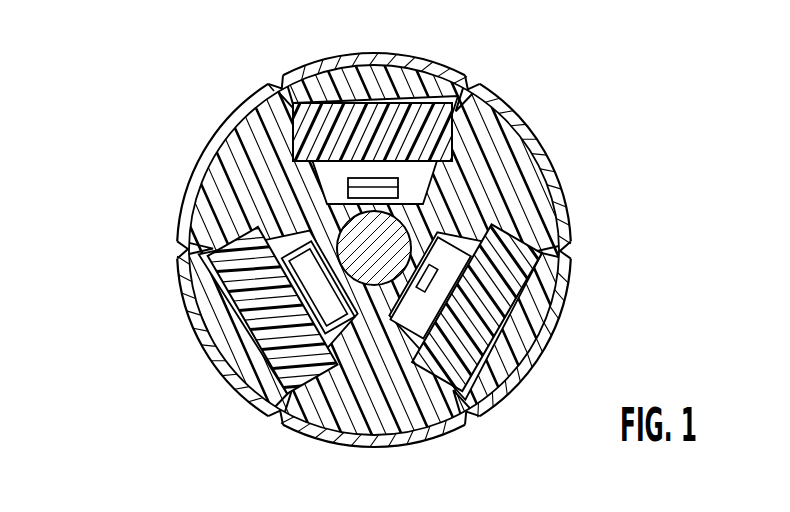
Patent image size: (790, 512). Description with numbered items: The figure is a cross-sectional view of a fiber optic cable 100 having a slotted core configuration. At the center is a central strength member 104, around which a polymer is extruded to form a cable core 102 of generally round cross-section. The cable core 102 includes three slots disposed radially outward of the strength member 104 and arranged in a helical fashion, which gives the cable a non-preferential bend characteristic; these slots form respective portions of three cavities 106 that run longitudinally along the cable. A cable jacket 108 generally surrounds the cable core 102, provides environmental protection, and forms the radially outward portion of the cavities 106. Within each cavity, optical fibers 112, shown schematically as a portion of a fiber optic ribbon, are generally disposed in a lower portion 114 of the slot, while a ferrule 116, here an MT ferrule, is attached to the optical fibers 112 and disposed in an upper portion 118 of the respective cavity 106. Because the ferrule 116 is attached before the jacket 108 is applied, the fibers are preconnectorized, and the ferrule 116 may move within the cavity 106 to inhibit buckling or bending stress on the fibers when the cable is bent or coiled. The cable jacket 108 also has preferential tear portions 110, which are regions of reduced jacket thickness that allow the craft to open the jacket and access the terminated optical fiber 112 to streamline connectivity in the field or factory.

The fiber optic cable 100 is at (634, 99).
The cable core 102 is at (400, 438).
The central strength member 104 is at (370, 240).
The cavities 106 is at (374, 98).
The cable jacket 108 is at (552, 166).
The preferential tear portions 110 is at (268, 87).
The optical fiber 112 is at (372, 188).
The lower portion 114 is at (398, 190).
The ferrule 116 is at (434, 127).
The upper portions 118 is at (258, 88).